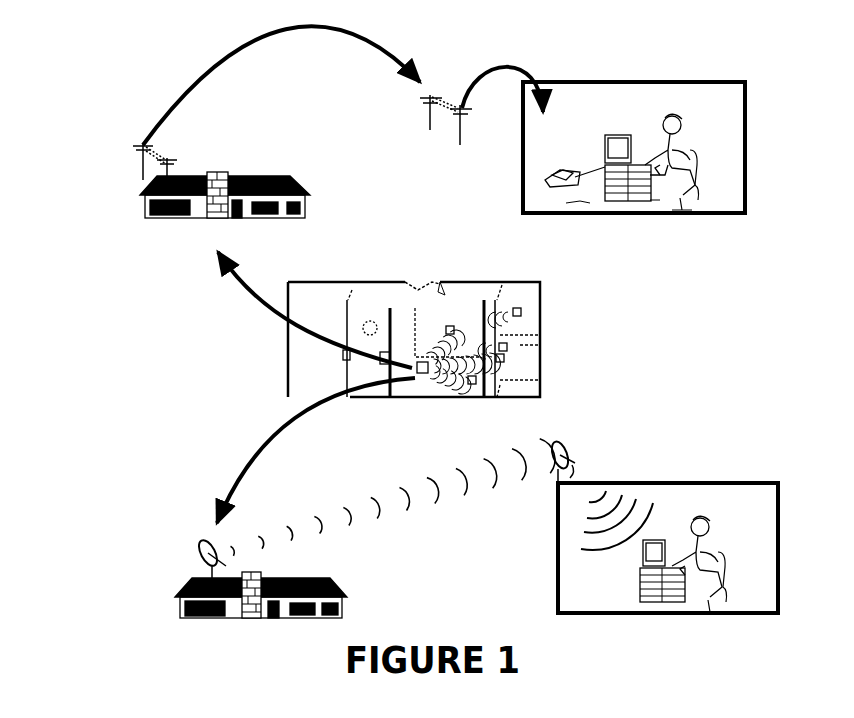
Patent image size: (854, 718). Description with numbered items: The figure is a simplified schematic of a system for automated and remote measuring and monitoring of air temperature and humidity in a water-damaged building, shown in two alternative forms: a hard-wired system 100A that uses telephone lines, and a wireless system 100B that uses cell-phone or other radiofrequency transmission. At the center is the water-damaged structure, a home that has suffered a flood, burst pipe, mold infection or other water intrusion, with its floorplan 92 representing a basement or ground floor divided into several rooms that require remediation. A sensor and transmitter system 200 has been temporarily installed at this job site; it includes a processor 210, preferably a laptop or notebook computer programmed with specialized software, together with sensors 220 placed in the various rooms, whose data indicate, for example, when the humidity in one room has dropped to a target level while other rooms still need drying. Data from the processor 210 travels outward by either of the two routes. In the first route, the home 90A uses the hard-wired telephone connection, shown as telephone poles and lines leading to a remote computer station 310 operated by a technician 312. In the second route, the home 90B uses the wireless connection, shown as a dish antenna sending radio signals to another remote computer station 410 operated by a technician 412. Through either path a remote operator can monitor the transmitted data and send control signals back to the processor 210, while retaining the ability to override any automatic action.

The home with hard-wired telephone connection 90A is at (264, 176).
The home with wireless connection 90B is at (277, 634).
The floorplan 92 is at (457, 268).
The hard-wired monitoring system 100A is at (188, 297).
The wireless monitoring system 100B is at (222, 426).
The sensor and transmitter system 200 is at (498, 268).
The processor 210 is at (422, 386).
The sensor 220 is at (490, 378).
The remote monitoring computer station 310 is at (606, 122).
The remote operator 312 is at (685, 108).
The wireless monitoring computer station 410 is at (633, 578).
The wireless station operator 412 is at (745, 558).